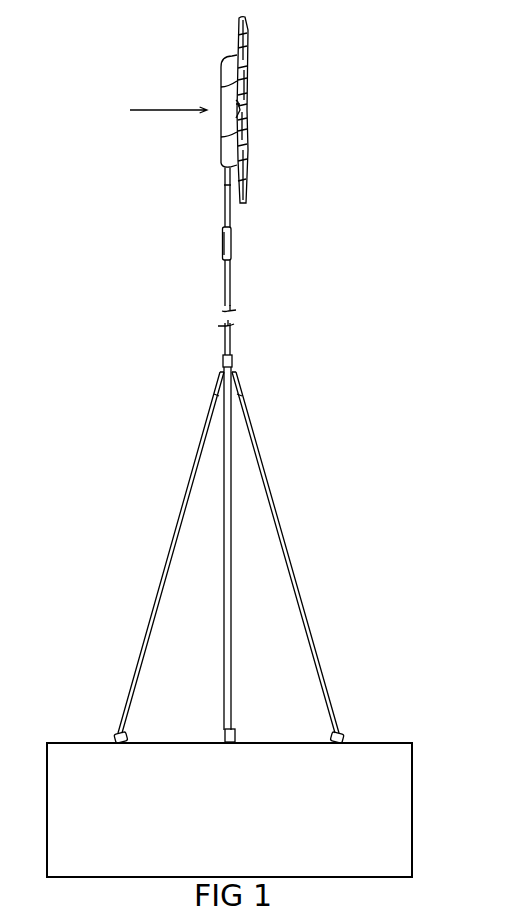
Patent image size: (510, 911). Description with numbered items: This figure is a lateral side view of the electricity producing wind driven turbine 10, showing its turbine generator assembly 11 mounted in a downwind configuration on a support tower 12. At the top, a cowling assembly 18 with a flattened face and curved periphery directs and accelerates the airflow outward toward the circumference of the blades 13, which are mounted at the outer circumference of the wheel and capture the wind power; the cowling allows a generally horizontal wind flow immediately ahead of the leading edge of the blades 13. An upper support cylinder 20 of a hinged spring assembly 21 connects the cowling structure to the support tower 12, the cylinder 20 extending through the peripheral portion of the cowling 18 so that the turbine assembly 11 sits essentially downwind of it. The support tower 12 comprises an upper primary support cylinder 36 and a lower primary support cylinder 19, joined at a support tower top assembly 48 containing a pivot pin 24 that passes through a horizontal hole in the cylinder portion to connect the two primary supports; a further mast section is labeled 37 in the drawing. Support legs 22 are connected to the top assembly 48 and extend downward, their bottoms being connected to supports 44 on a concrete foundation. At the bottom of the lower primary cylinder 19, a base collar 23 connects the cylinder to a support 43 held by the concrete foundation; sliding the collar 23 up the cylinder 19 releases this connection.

The wind driven turbine 10 is at (154, 147).
The turbine generator assembly 11 is at (277, 48).
The blades 13 is at (245, 123).
The cowling assembly 18 is at (199, 65).
The upper support cylinder 20 is at (225, 167).
The hinged spring assembly 21 is at (245, 238).
The upper mast segment 37 is at (225, 278).
The upper primary support cylinder 36 is at (232, 332).
The support tower 12 is at (252, 338).
The pivot pin 24 is at (232, 378).
The support tower top assembly 48 is at (228, 392).
The support legs 22 is at (175, 547).
The lower primary support cylinder 19 is at (225, 620).
The supports 44 is at (118, 735).
The base collar 23 is at (235, 730).
The support 43 is at (223, 744).